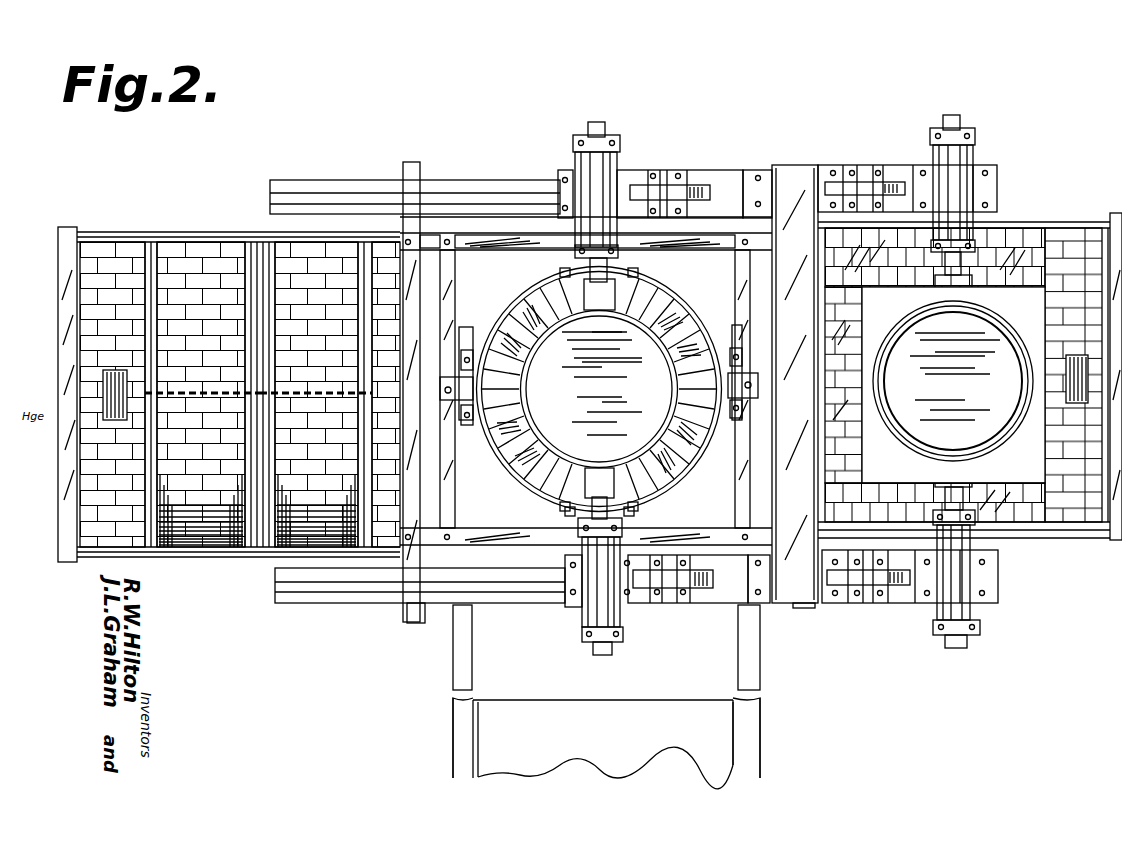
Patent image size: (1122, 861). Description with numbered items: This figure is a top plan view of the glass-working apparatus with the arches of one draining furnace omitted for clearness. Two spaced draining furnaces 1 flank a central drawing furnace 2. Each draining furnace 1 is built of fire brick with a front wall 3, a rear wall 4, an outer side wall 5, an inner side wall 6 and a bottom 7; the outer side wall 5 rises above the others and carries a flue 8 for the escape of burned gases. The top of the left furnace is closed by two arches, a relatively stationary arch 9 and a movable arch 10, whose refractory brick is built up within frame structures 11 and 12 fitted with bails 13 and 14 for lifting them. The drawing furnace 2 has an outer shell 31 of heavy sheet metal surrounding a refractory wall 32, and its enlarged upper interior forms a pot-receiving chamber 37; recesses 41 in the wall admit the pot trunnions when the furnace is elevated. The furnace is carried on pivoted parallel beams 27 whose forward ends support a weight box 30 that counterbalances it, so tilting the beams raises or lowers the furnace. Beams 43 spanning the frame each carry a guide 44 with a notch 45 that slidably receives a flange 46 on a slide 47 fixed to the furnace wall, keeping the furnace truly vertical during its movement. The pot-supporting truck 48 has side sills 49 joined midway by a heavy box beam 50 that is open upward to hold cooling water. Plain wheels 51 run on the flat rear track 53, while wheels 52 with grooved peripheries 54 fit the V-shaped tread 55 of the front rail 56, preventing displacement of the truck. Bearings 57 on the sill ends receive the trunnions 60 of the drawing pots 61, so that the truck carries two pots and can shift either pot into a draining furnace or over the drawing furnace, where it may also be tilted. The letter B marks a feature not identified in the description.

The draining furnace 1 is at (138, 547).
The drawing furnace 2 is at (685, 478).
The front wall 3 is at (1068, 318).
The rear wall 4 is at (1010, 260).
The outer side wall 5 is at (118, 285).
The inner side wall 6 is at (398, 318).
The bottom 7 is at (1030, 440).
The flue 8 is at (112, 388).
The arch 9 is at (180, 262).
The arch 10 is at (310, 275).
The frame structure 11 is at (255, 553).
The frame structure 12 is at (348, 549).
The bail 13 is at (195, 393).
The bail 14 is at (293, 393).
The parallel beams 27 is at (460, 663).
The weight box 30 is at (548, 718).
The outer shell 31 is at (680, 443).
The wall 32 is at (685, 425).
The pot-receiving chamber 37 is at (675, 318).
The recesses 41 is at (575, 505).
The beams 43 is at (459, 300).
The guide 44 is at (466, 425).
The notch or groove 45 is at (468, 350).
The flange 46 is at (520, 385).
The slide 47 is at (520, 372).
The truck 48 is at (748, 178).
The side sills 49 is at (700, 175).
The box beam 50 is at (815, 178).
The wheels 51 is at (640, 188).
The wheels 52 is at (697, 590).
The track 53 is at (500, 195).
The grooved peripheries 54 is at (650, 600).
The V-shaped tread 55 is at (535, 592).
The rail 56 is at (485, 600).
The bearings 57 is at (975, 136).
The trunnion 60 is at (975, 490).
The drawing pot 61 is at (1014, 308).
The opening B is at (1078, 380).